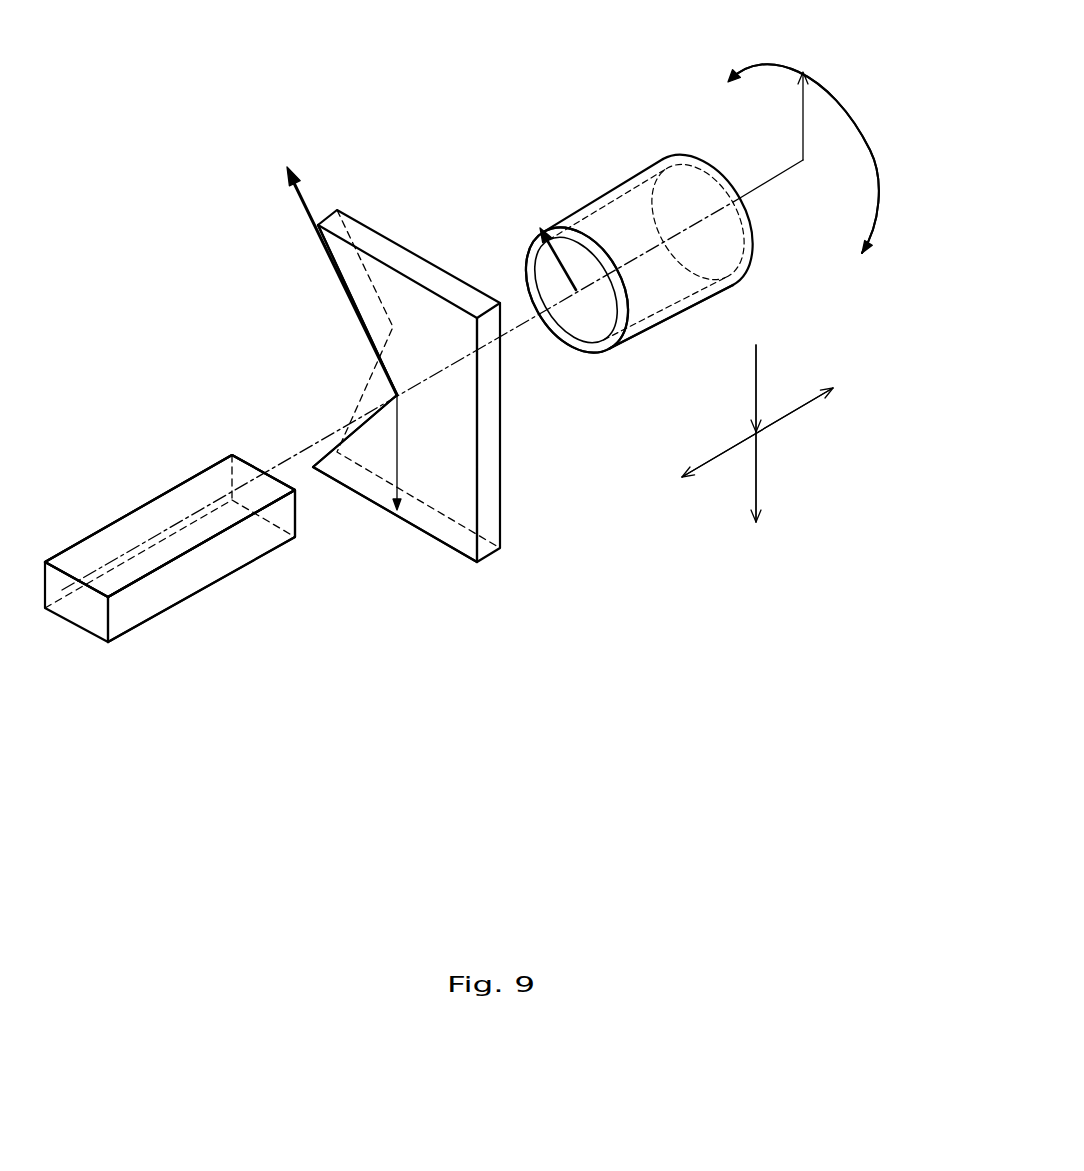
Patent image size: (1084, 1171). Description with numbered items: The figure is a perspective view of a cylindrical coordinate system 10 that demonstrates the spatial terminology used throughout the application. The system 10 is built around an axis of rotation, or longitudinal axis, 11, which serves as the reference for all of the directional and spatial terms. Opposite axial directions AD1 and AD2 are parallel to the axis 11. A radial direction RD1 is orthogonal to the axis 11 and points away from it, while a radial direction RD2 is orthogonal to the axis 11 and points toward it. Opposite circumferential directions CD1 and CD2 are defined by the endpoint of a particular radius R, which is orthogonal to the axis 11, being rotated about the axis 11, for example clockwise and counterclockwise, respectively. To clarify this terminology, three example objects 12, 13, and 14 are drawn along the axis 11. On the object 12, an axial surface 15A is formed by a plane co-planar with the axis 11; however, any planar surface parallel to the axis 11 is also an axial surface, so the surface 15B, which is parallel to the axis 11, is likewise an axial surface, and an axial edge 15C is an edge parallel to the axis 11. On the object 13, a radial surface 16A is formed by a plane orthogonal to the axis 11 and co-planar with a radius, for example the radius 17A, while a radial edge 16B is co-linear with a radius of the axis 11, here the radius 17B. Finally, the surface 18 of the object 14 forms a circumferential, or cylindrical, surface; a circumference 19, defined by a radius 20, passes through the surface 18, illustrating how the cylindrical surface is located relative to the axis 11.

The cylindrical coordinate system 10 is at (252, 293).
The axis of rotation 11 is at (739, 198).
The object 12 is at (183, 534).
The object 13 is at (459, 343).
The object 14 is at (672, 330).
The axial surface 15A is at (133, 530).
The axial surface 15B is at (187, 584).
The axial edge 15C is at (158, 487).
The radial surface 16A is at (403, 293).
The radial edge 16B is at (347, 288).
The radius 17A is at (397, 447).
The radius 17B is at (297, 203).
The circumferential surface 18 is at (607, 192).
The circumference 19 is at (528, 252).
The radius 20 is at (540, 300).
The radius R is at (800, 110).
The circumferential direction CD1 is at (887, 216).
The circumferential direction CD2 is at (758, 53).
The radial direction RD1 is at (760, 487).
The radial direction RD2 is at (760, 363).
The axial direction AD1 is at (787, 413).
The axial direction AD2 is at (717, 455).